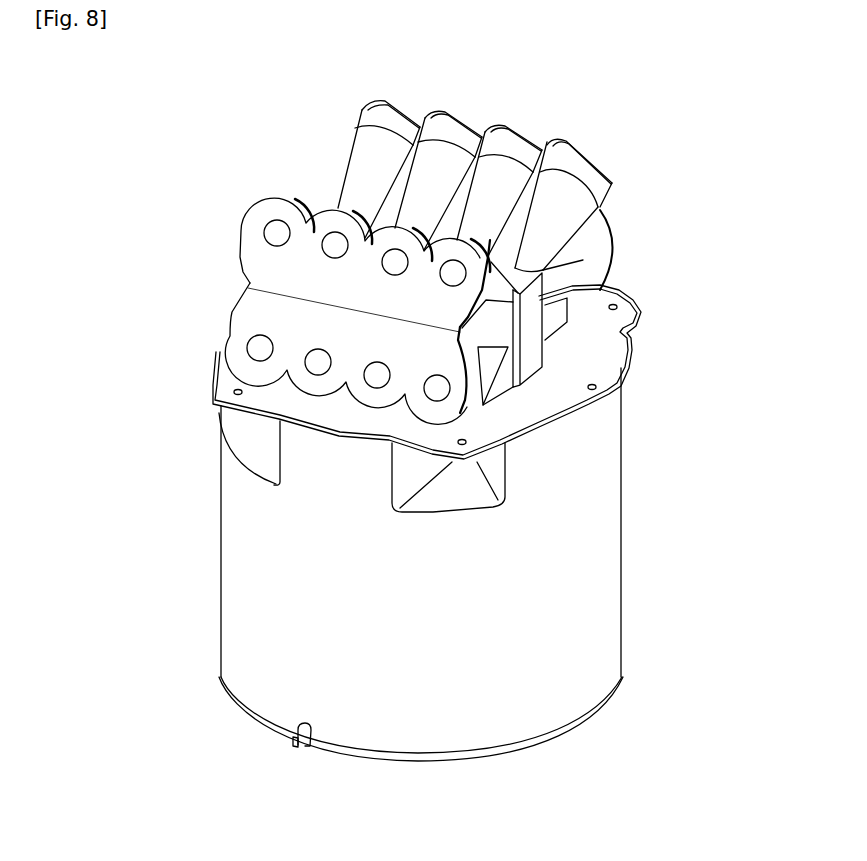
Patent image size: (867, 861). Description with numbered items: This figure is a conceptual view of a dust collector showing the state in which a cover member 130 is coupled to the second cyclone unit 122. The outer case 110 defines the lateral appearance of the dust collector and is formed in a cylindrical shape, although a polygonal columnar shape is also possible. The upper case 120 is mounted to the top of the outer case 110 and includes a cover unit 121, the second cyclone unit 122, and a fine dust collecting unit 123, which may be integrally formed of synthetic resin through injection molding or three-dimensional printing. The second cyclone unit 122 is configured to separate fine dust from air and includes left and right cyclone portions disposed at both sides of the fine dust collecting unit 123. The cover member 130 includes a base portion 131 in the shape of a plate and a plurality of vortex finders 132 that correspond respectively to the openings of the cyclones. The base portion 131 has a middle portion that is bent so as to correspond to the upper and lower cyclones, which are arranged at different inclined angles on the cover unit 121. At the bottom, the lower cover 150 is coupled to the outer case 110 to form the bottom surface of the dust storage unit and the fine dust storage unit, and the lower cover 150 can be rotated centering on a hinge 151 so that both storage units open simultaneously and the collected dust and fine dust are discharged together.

The outer case 110 is at (597, 483).
The upper case 120 is at (493, 280).
The cover unit 121 is at (593, 340).
The second cyclone unit 122 is at (593, 270).
The fine dust collecting unit 123 is at (535, 302).
The cover member 130 is at (291, 311).
The base portion 131 is at (253, 253).
The vortex finders 132 is at (262, 347).
The lower cover 150 is at (532, 743).
The hinge 151 is at (297, 748).